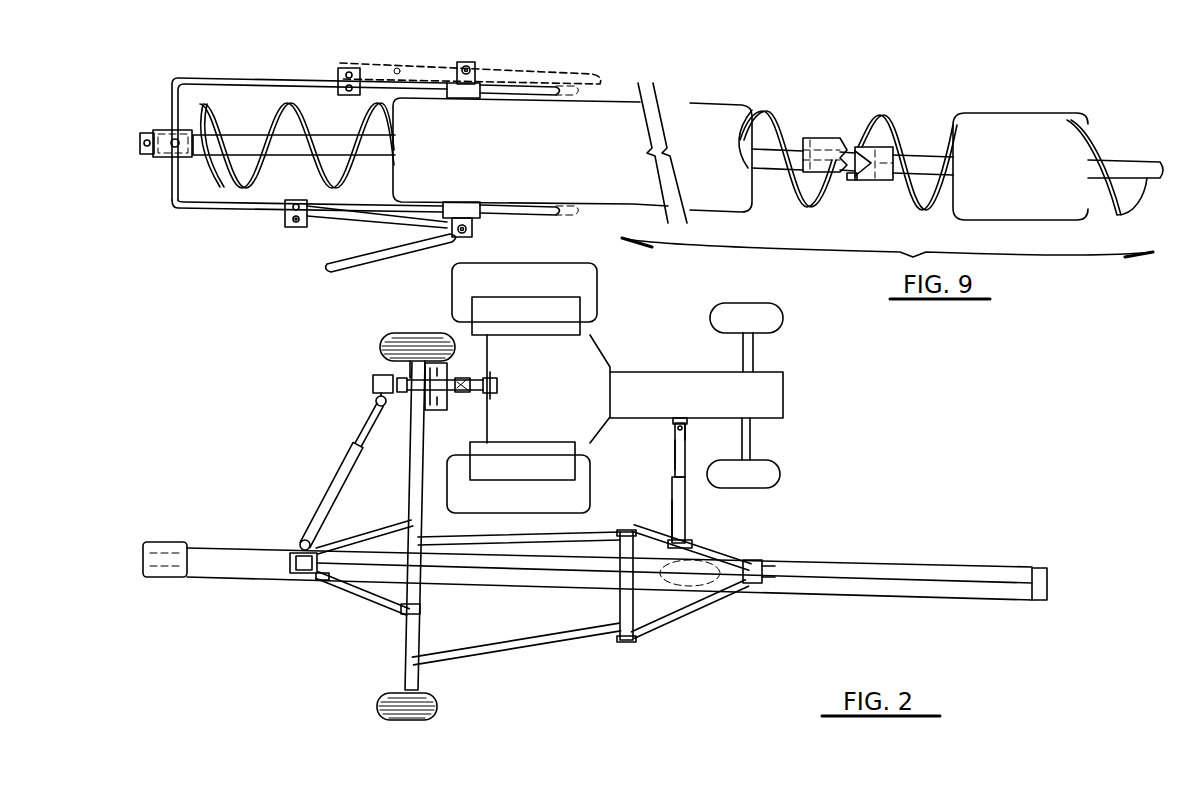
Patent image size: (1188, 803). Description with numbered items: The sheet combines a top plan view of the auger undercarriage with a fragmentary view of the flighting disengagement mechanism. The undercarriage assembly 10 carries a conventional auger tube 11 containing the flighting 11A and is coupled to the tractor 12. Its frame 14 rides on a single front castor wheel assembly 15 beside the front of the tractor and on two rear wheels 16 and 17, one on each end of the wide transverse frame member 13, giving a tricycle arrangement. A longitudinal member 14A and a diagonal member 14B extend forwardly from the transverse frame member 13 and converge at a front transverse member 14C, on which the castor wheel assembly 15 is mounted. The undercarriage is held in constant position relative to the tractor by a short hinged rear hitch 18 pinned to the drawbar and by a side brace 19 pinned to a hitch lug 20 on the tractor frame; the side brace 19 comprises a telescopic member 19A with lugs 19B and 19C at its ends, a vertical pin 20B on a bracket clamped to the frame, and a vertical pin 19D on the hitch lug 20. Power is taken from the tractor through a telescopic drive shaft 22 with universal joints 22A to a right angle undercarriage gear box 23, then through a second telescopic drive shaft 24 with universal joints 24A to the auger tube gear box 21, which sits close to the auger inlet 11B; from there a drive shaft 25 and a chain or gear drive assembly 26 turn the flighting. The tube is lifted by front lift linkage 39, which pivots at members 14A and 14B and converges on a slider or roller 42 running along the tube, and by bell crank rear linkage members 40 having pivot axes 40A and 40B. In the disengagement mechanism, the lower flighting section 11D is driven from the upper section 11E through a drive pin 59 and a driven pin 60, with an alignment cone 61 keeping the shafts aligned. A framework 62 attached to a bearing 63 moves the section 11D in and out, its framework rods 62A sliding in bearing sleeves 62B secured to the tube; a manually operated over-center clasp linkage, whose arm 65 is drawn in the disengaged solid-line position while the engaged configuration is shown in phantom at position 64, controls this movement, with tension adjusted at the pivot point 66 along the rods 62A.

In FIG. 2, the undercarriage assembly 10 is at (564, 638).
In FIG. 9, the auger tube 11 is at (712, 112).
In FIG. 2, the auger tube 11 is at (855, 569).
In FIG. 9, the flighting 11A is at (760, 120).
In FIG. 9, the auger inlet 11B is at (262, 103).
In FIG. 2, the auger inlet 11B is at (156, 578).
In FIG. 9, the lower section of the flighting 11D is at (254, 161).
In FIG. 9, the upper section of the flighting 11E is at (900, 130).
In FIG. 2, the tractor 12 is at (644, 368).
In FIG. 2, the transverse frame member 13 is at (414, 485).
In FIG. 2, the frame 14 is at (581, 580).
In FIG. 2, the longitudinal member 14A is at (480, 545).
In FIG. 2, the diagonal member 14B is at (556, 627).
In FIG. 2, the front transverse member 14C is at (690, 600).
In FIG. 2, the front castor wheel assembly 15 is at (715, 590).
In FIG. 2, the rear wheel 16 is at (396, 335).
In FIG. 2, the rear wheel 17 is at (381, 700).
In FIG. 2, the hinged rear hitch 18 is at (462, 395).
In FIG. 2, the side brace 19 is at (689, 508).
In FIG. 2, the telescopic member 19A is at (674, 478).
In FIG. 2, the lug 19B is at (686, 532).
In FIG. 2, the lug 19C is at (686, 432).
In FIG. 2, the vertical pin 19D is at (680, 418).
In FIG. 2, the hitch lug 20 is at (675, 424).
In FIG. 2, the vertical pin 20B is at (672, 540).
In FIG. 2, the auger tube gear box 21 is at (289, 563).
In FIG. 2, the telescopic drive shaft 22 is at (441, 373).
In FIG. 2, the universal joints 22A is at (400, 378).
In FIG. 2, the undercarriage gear box 23 is at (371, 382).
In FIG. 2, the second telescopic drive shaft 24 is at (333, 474).
In FIG. 2, the universal joints 24A is at (375, 402).
In FIG. 2, the drive shaft 25 is at (901, 578).
In FIG. 2, the chain or gear drive assembly 26 is at (1045, 578).
In FIG. 2, the front lift linkage 39 is at (665, 633).
In FIG. 2, the rear linkage members 40 is at (366, 601).
In FIG. 2, the pivot axis 40A is at (421, 608).
In FIG. 2, the pivot axis 40B is at (330, 580).
In FIG. 2, the slider or roller 42 is at (757, 560).
In FIG. 9, the pin 59 is at (856, 181).
In FIG. 9, the pin 60 is at (828, 120).
In FIG. 9, the alignment cone 61 is at (858, 148).
In FIG. 9, the framework 62 is at (243, 54).
In FIG. 9, the framework rods 62A is at (521, 95).
In FIG. 9, the bearing sleeves 62B is at (470, 98).
In FIG. 9, the bearing 63 is at (163, 130).
In FIG. 9, the engaged position 64 is at (531, 69).
In FIG. 9, the arm 65 is at (327, 274).
In FIG. 9, the pivot point 66 is at (290, 228).